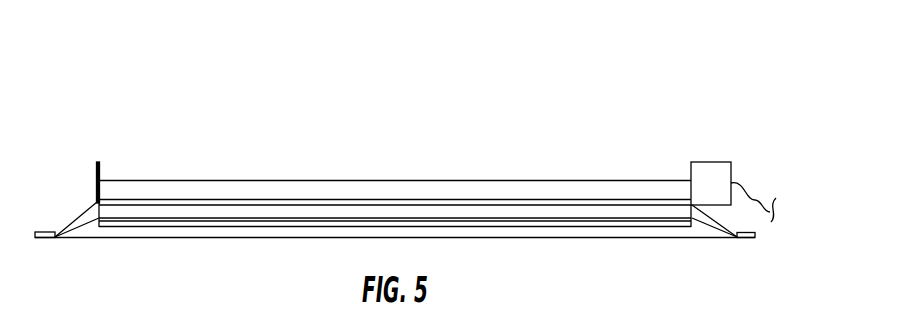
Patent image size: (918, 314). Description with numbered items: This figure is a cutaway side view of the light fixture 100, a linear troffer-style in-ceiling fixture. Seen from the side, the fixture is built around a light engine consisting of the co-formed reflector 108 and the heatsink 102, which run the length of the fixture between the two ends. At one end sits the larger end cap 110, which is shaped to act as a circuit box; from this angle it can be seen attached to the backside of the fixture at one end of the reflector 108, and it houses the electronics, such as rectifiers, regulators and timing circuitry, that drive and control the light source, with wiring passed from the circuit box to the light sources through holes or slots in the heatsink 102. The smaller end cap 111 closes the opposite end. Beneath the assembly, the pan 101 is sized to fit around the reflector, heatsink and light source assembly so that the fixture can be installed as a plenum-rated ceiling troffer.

The light fixture 100 is at (545, 80).
The pan 101 is at (287, 233).
The heatsink 102 is at (430, 218).
The reflector 108 is at (186, 188).
The end cap 110 is at (703, 162).
The end cap 111 is at (97, 168).